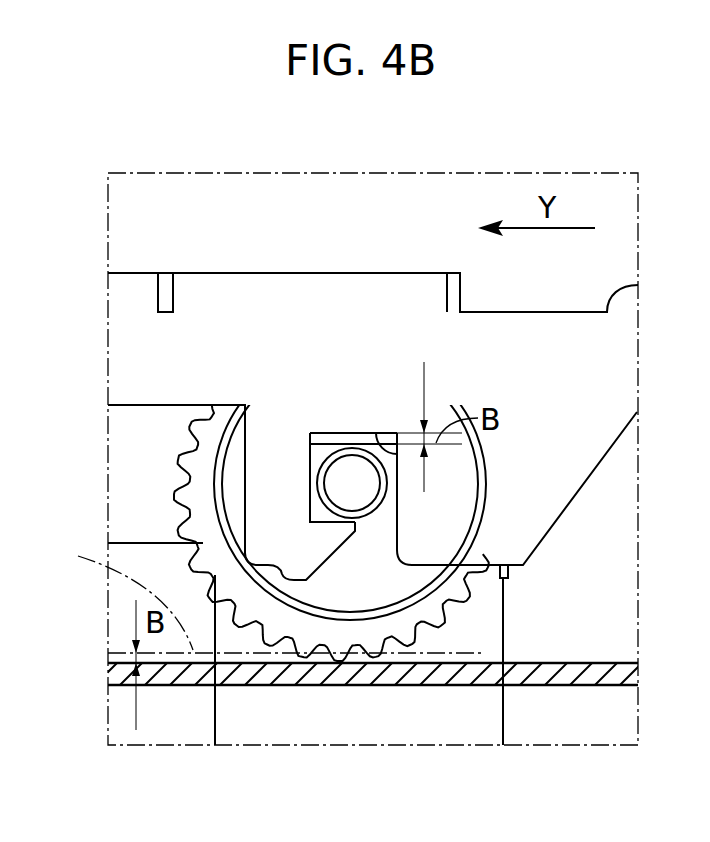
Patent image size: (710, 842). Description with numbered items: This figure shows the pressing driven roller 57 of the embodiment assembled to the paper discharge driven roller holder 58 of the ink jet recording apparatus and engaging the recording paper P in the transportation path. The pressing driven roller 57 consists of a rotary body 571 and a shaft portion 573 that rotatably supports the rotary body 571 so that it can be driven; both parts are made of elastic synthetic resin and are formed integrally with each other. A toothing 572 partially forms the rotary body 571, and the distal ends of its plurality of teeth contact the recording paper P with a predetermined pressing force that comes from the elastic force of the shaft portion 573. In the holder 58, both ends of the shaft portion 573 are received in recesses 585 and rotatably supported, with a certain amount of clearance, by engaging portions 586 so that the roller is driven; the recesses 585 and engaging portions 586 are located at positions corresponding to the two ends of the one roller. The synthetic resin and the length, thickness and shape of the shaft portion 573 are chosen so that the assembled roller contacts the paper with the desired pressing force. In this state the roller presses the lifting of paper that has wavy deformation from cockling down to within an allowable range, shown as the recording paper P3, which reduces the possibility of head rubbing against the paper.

The paper discharge driven roller holder 58 is at (256, 297).
The recess 585 is at (397, 432).
The pressing driven roller 57 is at (280, 576).
The rotary body 571 is at (392, 575).
The toothing 572 is at (310, 628).
The shaft portion 573 is at (357, 490).
The engaging portion 586 is at (330, 543).
The recording paper P is at (598, 663).
The recording paper P3 is at (262, 593).